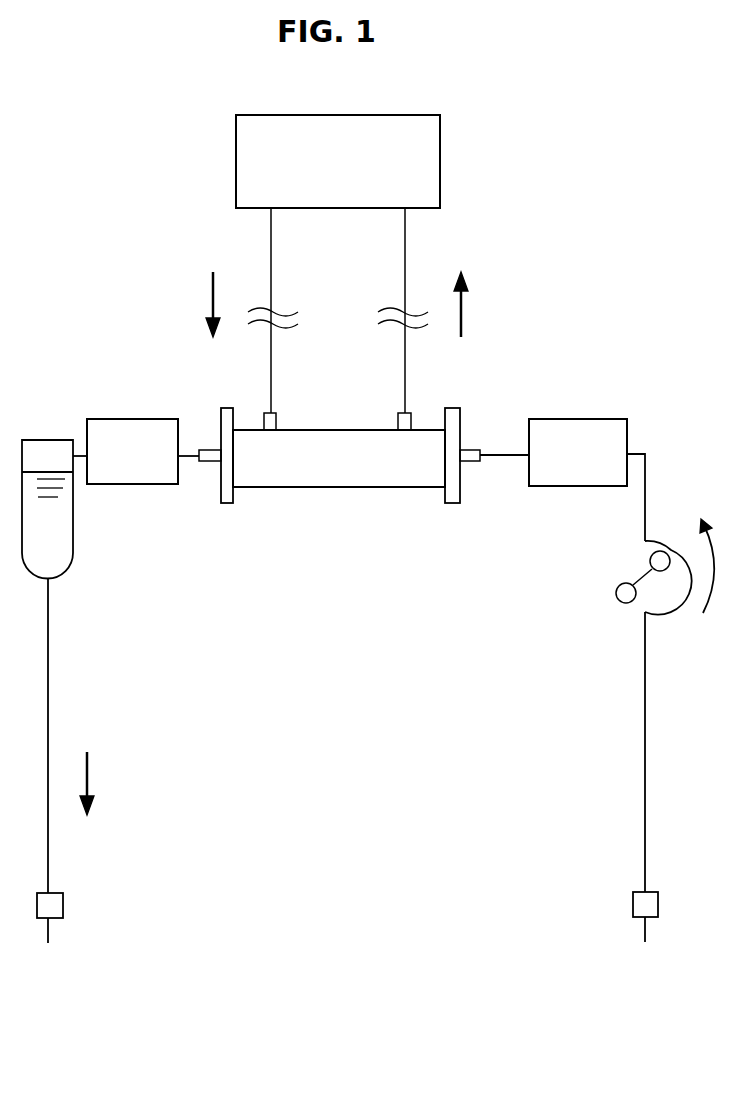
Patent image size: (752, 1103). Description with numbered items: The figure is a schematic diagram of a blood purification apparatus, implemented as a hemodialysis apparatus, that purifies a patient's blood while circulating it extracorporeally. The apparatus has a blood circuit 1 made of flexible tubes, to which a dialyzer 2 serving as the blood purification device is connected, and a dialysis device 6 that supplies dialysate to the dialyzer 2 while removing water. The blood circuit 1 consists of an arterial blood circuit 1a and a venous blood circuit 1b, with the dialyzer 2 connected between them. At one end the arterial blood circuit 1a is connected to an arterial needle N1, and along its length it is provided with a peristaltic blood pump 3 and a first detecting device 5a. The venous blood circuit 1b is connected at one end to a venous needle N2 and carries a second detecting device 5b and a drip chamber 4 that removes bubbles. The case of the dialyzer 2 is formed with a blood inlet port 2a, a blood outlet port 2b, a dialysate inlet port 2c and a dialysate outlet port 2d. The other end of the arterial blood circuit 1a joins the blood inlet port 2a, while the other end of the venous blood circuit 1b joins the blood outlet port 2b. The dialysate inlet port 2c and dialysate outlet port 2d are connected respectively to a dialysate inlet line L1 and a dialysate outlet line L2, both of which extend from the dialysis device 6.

The blood circuit 1 is at (566, 242).
The arterial blood circuit 1a is at (645, 747).
The venous blood circuit 1b is at (48, 670).
The dialyzer 2 is at (287, 487).
The blood inlet port 2a is at (473, 462).
The blood outlet port 2b is at (208, 462).
The dialysate inlet port 2c is at (268, 412).
The dialysate outlet port 2d is at (402, 412).
The peristaltic blood pump 3 is at (633, 567).
The drip chamber 4 is at (73, 556).
The first detecting device 5a is at (582, 486).
The second detecting device 5b is at (128, 484).
The dialysis device 6 is at (440, 148).
The dialysate inlet line L1 is at (271, 257).
The dialysate outlet line L2 is at (405, 267).
The arterial needle N1 is at (645, 930).
The venous needle N2 is at (48, 933).